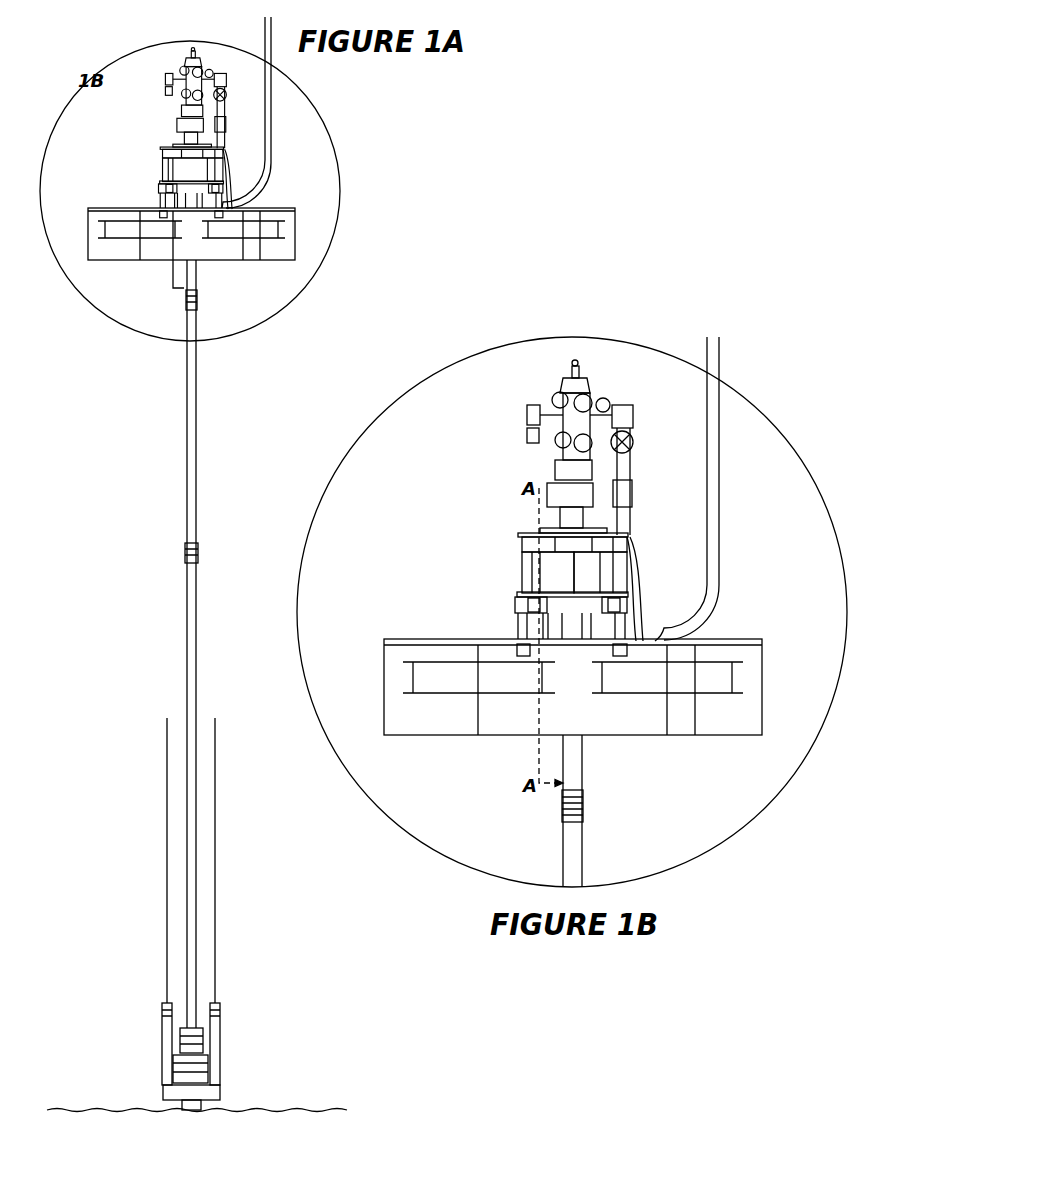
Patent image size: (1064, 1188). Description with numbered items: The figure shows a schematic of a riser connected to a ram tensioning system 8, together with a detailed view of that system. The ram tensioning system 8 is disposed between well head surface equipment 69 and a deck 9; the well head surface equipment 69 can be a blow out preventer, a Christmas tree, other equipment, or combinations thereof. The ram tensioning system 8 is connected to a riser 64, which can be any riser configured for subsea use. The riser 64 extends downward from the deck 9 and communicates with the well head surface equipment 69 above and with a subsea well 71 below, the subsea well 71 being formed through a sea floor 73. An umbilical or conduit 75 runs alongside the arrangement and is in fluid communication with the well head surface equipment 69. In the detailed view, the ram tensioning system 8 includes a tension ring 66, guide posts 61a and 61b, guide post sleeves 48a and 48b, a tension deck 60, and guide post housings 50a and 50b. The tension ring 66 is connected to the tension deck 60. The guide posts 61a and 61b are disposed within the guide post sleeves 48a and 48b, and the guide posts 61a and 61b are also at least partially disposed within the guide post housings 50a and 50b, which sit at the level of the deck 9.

In FIG. 1A, the ram tensioning system 8 is at (142, 172).
In FIG. 1B, the ram tensioning system 8 is at (561, 569).
In FIG. 1A, the deck 9 is at (285, 208).
In FIG. 1B, the guide post sleeve 48a is at (517, 612).
In FIG. 1B, the guide post sleeve 48b is at (630, 612).
In FIG. 1B, the guide post housing 50a is at (517, 648).
In FIG. 1B, the guide post housing 50b is at (628, 648).
In FIG. 1B, the tension deck 60 is at (518, 533).
In FIG. 1B, the guide post 61a is at (520, 573).
In FIG. 1B, the guide post 61b is at (628, 560).
In FIG. 1A, the riser 64 is at (187, 430).
In FIG. 1B, the riser 64 is at (563, 857).
In FIG. 1B, the tension ring 66 is at (553, 530).
In FIG. 1A, the well head surface equipment 69 is at (153, 103).
In FIG. 1B, the well head surface equipment 69 is at (527, 412).
In FIG. 1A, the subsea well 71 is at (173, 1087).
In FIG. 1A, the sea floor 73 is at (312, 1108).
In FIG. 1A, the umbilical or conduit 75 is at (274, 148).
In FIG. 1B, the umbilical or conduit 75 is at (721, 505).